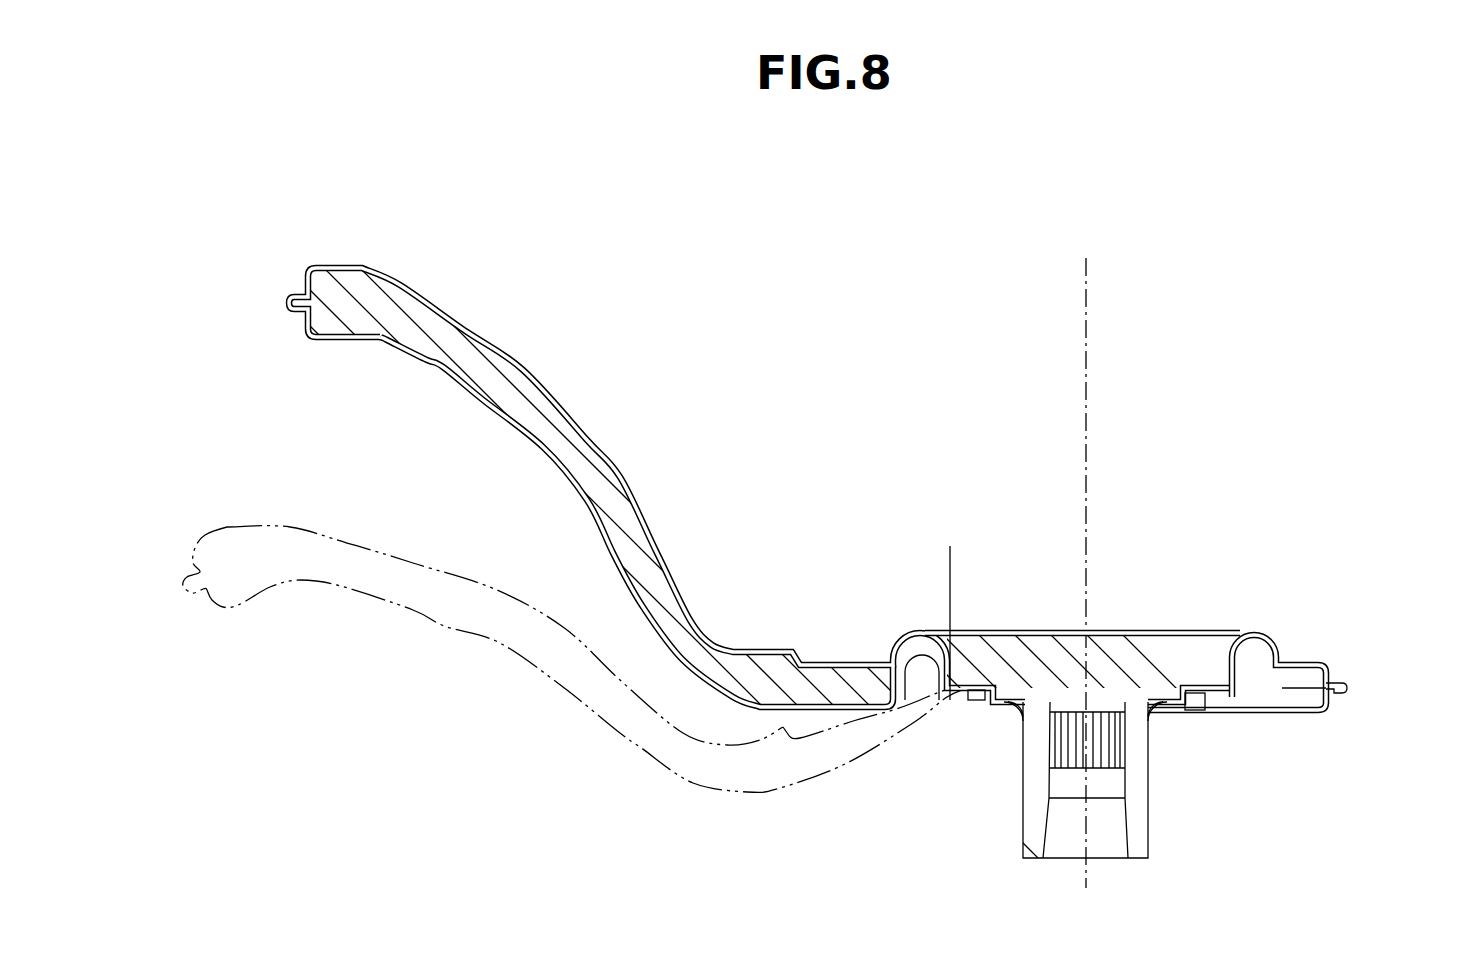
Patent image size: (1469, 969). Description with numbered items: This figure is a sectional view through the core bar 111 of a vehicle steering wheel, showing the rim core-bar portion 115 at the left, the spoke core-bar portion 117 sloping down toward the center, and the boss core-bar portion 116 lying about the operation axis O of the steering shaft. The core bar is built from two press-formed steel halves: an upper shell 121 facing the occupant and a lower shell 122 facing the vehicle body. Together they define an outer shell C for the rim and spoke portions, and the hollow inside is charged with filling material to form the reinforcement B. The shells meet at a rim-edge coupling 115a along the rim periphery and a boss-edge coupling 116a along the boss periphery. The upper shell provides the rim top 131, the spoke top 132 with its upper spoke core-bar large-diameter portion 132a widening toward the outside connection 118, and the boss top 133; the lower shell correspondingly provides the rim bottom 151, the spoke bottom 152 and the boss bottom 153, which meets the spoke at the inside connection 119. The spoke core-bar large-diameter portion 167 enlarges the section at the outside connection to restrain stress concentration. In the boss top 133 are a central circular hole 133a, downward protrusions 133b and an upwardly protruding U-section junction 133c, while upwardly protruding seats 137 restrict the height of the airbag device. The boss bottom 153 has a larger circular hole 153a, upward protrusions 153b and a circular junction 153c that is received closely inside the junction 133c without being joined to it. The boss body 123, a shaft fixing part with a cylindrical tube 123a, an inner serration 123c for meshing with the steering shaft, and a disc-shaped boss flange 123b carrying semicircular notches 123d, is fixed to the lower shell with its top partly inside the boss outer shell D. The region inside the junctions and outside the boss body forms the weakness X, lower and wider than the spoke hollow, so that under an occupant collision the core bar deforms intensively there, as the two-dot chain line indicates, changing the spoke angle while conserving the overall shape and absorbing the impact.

The core bar 111 is at (1302, 518).
The rim core-bar portion 115 is at (298, 342).
The rim-edge coupling 115a is at (293, 297).
The boss core-bar portion 116 is at (1262, 772).
The boss-edge coupling 116a is at (1348, 689).
The spoke core-bar portion 117 is at (610, 398).
The outside connection 118 is at (378, 270).
The inside connection 119 is at (826, 665).
The upper shell 121 is at (386, 274).
The lower shell 122 is at (443, 368).
The boss body 123 is at (1165, 806).
The tube 123a is at (1152, 828).
The boss flange 123b is at (1160, 700).
The serration 123c is at (1096, 735).
The semicircular notch 123d is at (1182, 712).
The rim top 131 is at (332, 264).
The spoke top 132 is at (523, 372).
The upper spoke core-bar large-diameter portion 132a is at (383, 343).
The boss top 133 is at (1004, 700).
The circular hole 133a is at (1052, 700).
The protrusion 133b is at (975, 690).
The junction 133c is at (908, 633).
The seat 137 is at (778, 650).
The rim bottom 151 is at (331, 340).
The spoke bottom 152 is at (487, 405).
The boss bottom 153 is at (998, 711).
The circular hole 153a is at (1022, 715).
The protrusion 153b is at (1197, 708).
The junction 153c is at (921, 695).
The spoke core-bar large-diameter portion 167 is at (352, 262).
The reinforcement B is at (634, 538).
The outer shell C is at (620, 478).
The boss outer shell D is at (1282, 663).
The operation axis O is at (1088, 286).
The weakness X is at (950, 608).